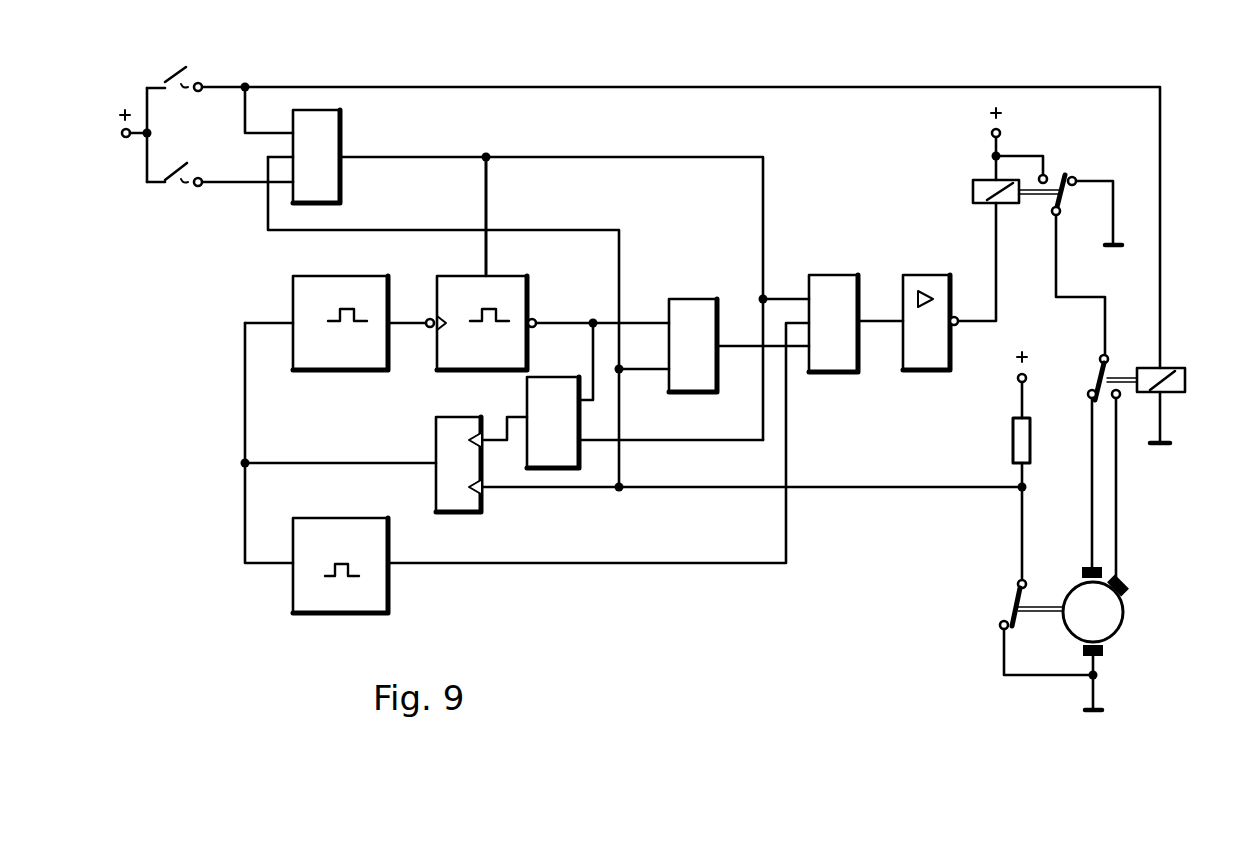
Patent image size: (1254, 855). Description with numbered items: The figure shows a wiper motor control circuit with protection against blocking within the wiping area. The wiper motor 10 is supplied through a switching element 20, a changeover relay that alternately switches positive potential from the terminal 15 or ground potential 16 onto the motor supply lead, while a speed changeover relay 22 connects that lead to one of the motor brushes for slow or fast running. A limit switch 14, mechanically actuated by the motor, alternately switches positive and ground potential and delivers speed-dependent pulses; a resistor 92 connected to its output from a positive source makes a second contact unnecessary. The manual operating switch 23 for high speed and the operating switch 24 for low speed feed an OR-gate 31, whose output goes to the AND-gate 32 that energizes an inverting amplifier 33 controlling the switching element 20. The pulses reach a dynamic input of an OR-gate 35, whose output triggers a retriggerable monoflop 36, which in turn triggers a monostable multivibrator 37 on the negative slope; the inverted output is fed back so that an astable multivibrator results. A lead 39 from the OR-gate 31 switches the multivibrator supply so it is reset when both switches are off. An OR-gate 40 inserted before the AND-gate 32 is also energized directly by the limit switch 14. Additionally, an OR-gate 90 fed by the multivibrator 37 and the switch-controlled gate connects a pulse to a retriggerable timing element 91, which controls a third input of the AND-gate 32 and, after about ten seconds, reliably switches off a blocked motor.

The wiper motor 10 is at (1110, 625).
The limit switch 14 is at (998, 600).
The positive terminal 15 is at (126, 138).
The ground potential 16 is at (1115, 198).
The switching element 20 is at (1012, 197).
The speed changeover relay 22 is at (1175, 385).
The manual operating switch 23 is at (166, 70).
The operating switch 24 is at (177, 160).
The OR-gate 31 is at (340, 137).
The AND-gate 32 is at (835, 277).
The inverting amplifier 33 is at (942, 362).
The OR-gate 35 is at (470, 503).
The monoflop 36 is at (347, 289).
The monostable multivibrator 37 is at (527, 290).
The lead 39 is at (488, 202).
The OR-gate 40 is at (697, 377).
The OR-gate 90 is at (566, 437).
The timing element 91 is at (382, 549).
The resistor 92 is at (1023, 447).